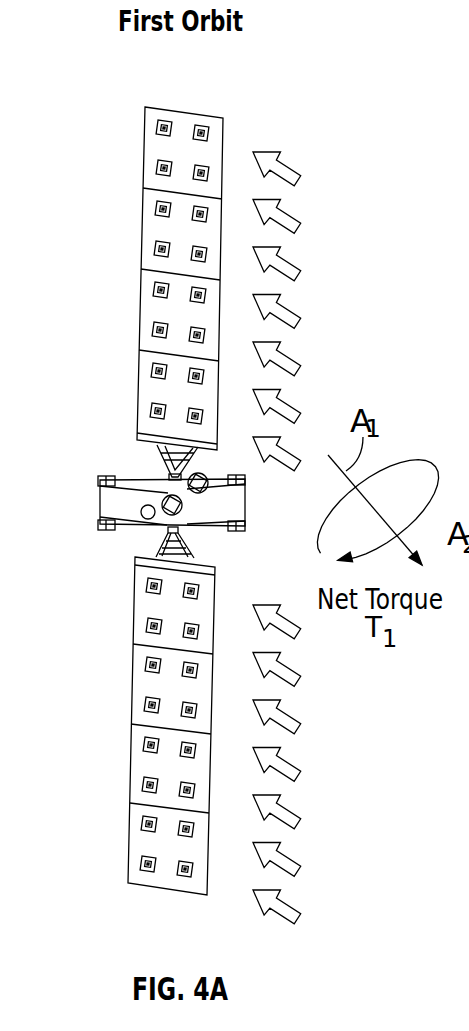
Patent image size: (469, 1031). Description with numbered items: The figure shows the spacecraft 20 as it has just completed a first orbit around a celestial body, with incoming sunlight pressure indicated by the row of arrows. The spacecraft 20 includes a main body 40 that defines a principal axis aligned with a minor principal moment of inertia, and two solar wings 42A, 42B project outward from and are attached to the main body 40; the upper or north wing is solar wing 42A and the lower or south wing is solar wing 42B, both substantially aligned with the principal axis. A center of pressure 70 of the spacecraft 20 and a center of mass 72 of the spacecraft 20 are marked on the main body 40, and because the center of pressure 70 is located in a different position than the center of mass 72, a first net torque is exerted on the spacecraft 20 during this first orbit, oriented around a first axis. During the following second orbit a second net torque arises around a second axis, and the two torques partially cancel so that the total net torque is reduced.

The spacecraft 20 is at (336, 230).
The main body 40 is at (97, 522).
The solar wing 42A is at (181, 128).
The solar wing 42B is at (140, 804).
The center of pressure 70 is at (163, 517).
The center of mass 72 is at (208, 488).